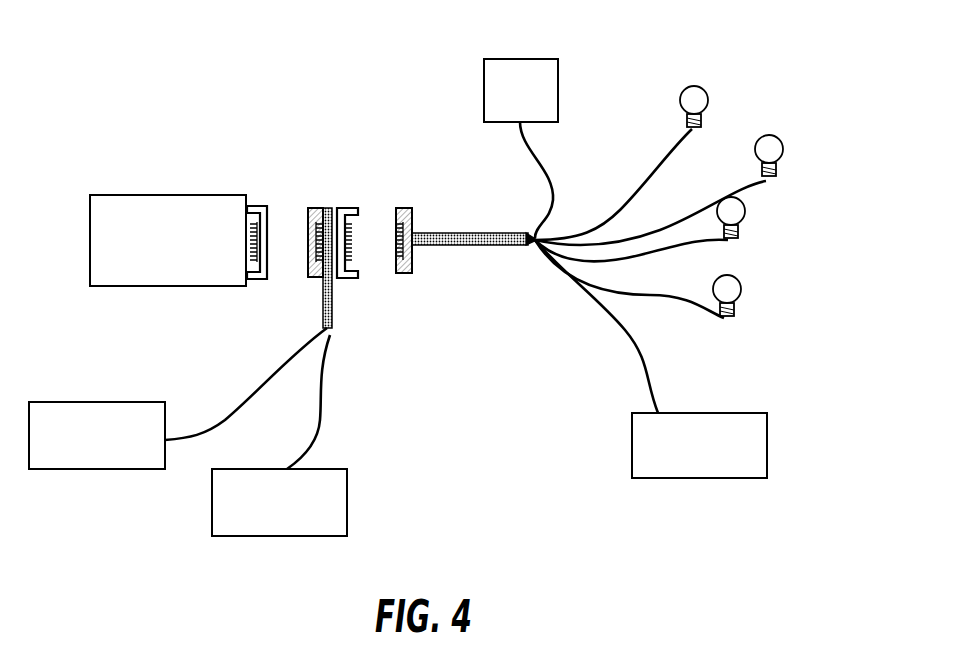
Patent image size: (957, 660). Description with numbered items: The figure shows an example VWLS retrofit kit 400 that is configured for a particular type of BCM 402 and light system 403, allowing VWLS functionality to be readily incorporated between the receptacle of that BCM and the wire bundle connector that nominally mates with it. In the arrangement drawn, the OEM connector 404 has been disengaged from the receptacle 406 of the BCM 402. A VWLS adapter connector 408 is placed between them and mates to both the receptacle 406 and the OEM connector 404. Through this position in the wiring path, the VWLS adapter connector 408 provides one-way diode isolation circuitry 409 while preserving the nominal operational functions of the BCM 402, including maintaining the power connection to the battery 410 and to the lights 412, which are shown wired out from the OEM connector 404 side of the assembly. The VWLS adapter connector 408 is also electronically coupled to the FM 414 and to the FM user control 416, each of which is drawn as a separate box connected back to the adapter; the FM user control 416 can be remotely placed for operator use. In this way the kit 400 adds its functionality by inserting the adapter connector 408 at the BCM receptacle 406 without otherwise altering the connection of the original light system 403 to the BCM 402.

The VWLS retrofit kit 400 is at (196, 392).
The BCM 402 is at (168, 240).
The light system 403 is at (246, 68).
The OEM connector 404 is at (402, 207).
The receptacle 406 is at (263, 282).
The VWLS adapter connector 408 is at (343, 283).
The one-way diode isolation circuitry 409 is at (324, 207).
The battery 410 is at (625, 268).
The lights 412 is at (745, 133).
The FM 414 is at (279, 435).
The FM user control 416 is at (178, 398).